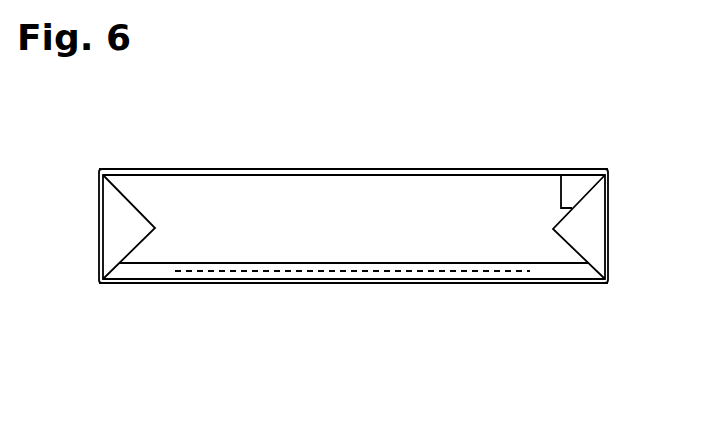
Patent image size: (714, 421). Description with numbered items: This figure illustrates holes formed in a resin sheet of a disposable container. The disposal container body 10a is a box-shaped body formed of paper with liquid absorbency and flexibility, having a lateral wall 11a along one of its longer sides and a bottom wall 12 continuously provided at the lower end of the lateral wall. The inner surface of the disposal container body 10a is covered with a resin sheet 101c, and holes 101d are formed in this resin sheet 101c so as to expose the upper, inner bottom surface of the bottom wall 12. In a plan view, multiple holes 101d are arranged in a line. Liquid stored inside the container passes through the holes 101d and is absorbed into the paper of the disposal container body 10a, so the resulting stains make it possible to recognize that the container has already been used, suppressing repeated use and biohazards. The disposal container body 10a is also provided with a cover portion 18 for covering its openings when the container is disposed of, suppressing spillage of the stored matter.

The cover portion 18 is at (300, 169).
The bottom wall 12 is at (410, 190).
The disposal container body 10a is at (366, 135).
The resin sheet 101c is at (497, 193).
The holes 101d is at (353, 274).
The lateral wall 11a is at (300, 283).